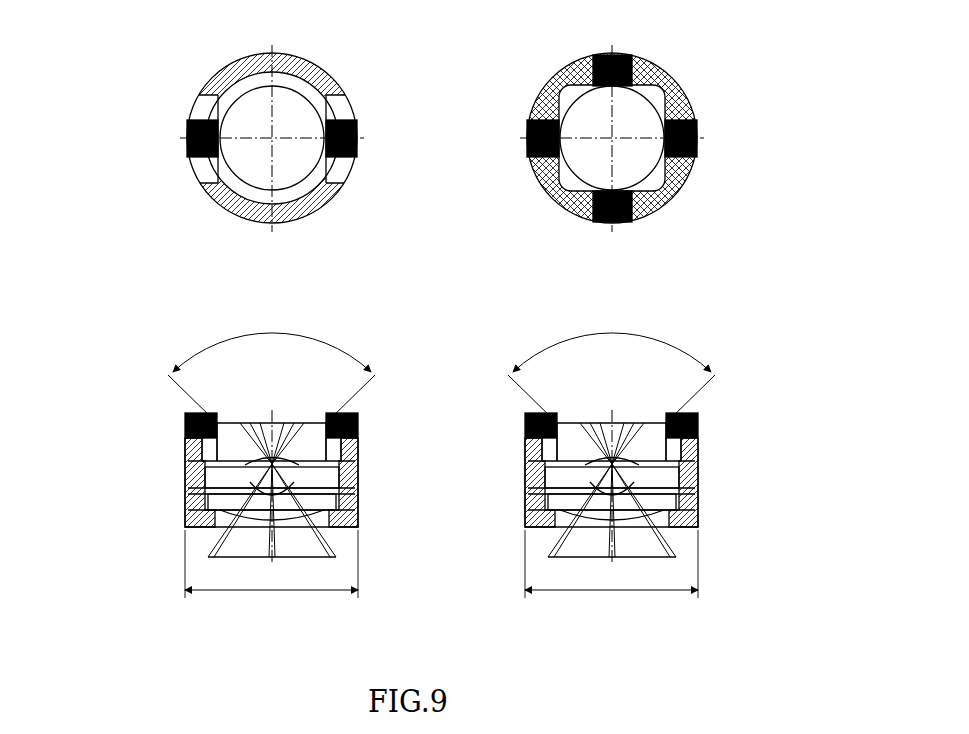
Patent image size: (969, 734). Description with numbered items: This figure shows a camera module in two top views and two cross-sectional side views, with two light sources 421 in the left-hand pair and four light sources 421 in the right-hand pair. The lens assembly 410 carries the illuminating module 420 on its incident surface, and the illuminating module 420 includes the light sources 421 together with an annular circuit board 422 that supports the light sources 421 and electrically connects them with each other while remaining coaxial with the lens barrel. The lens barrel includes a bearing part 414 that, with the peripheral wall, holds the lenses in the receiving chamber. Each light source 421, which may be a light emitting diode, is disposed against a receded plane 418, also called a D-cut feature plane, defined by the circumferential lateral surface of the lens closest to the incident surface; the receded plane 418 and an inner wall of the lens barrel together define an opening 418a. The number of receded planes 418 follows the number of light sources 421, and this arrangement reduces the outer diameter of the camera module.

The lens assembly 410 is at (82, 522).
The bearing part 414 is at (200, 518).
The receded plane 418 is at (217, 112).
The opening 418a is at (210, 452).
The illuminating module 420 is at (130, 146).
The light source 421 is at (350, 140).
The annular circuit board 422 is at (283, 72).